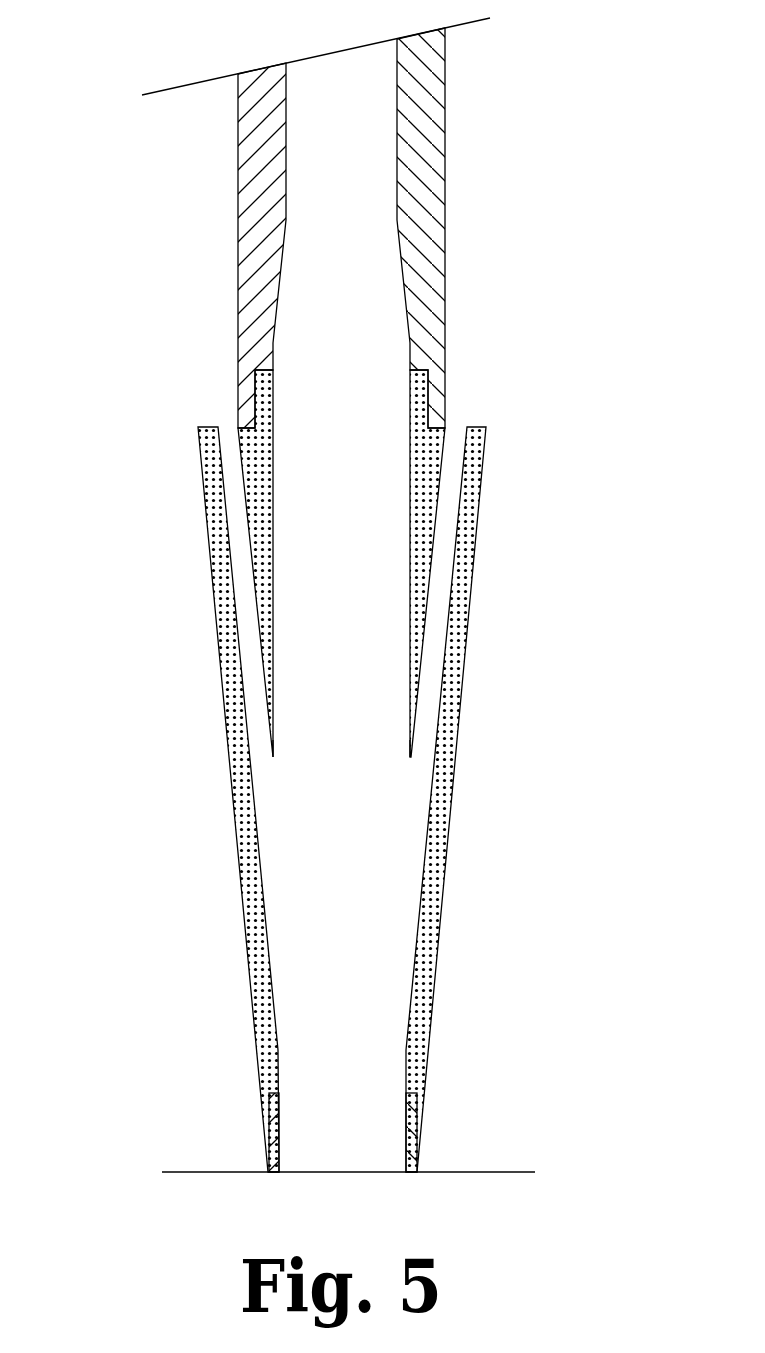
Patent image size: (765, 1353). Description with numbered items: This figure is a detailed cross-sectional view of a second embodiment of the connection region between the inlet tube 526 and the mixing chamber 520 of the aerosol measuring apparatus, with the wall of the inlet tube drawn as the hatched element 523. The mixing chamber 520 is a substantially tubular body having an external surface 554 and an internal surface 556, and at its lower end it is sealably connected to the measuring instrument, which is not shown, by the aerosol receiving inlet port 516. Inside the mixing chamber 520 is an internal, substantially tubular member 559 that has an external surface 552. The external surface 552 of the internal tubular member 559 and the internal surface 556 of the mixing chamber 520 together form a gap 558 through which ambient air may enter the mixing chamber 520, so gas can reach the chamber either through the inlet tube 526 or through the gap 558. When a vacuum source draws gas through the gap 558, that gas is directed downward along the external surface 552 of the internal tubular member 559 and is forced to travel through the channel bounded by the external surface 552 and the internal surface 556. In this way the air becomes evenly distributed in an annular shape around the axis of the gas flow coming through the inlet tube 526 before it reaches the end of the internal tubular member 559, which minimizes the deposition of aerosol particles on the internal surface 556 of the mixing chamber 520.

The inlet tube 526 is at (237, 183).
The second tapered wall 523 is at (446, 303).
The external surface of internal tubular member 552 is at (238, 428).
The gap 558 is at (455, 428).
The external surface of mixing chamber 554 is at (227, 742).
The mixing chamber 520 is at (463, 667).
The internal surface of mixing chamber 556 is at (260, 860).
The internal tubular member 559 is at (277, 700).
The aerosol receiving inlet port 516 is at (407, 1146).